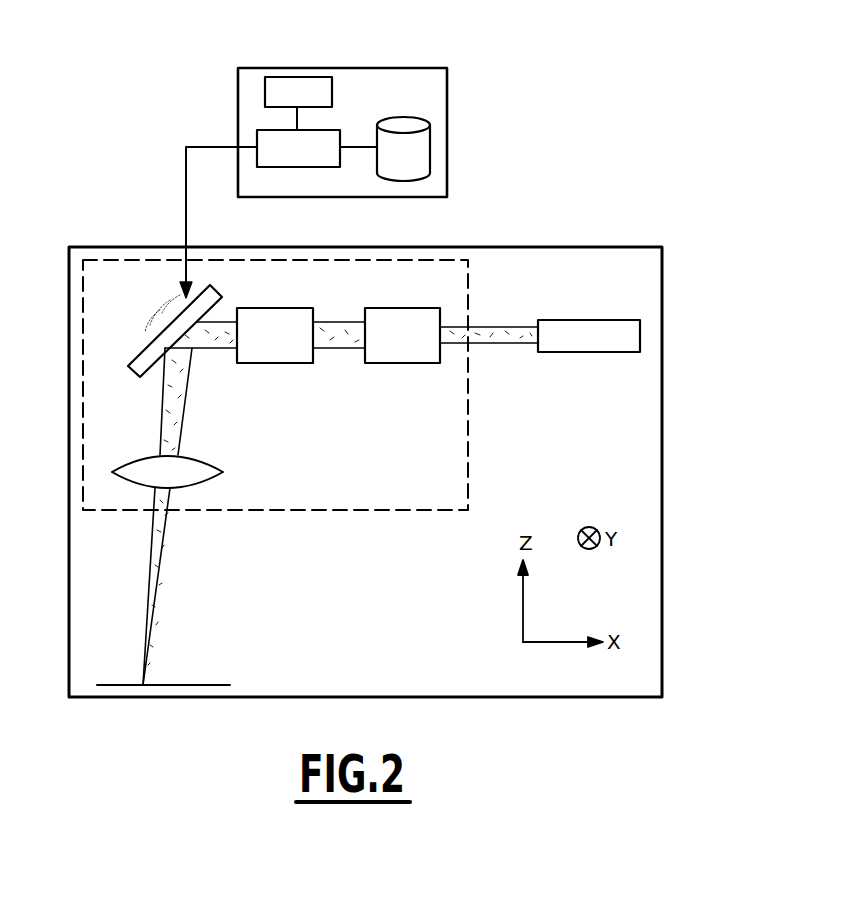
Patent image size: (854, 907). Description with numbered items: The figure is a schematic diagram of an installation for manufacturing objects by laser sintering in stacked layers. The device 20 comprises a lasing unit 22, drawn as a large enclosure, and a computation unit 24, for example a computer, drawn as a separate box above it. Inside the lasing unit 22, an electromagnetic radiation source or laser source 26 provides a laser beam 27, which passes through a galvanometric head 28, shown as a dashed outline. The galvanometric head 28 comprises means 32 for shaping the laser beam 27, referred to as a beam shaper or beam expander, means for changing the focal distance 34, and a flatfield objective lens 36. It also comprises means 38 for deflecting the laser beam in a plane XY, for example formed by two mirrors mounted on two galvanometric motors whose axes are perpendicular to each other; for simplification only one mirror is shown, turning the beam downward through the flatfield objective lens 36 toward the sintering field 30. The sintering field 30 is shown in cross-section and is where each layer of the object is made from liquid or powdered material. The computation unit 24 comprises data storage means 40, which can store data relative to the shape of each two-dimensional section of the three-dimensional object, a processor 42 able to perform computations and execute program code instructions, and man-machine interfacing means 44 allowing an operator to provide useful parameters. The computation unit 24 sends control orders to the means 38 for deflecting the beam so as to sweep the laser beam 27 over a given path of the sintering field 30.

The device 20 is at (578, 227).
The lasing unit 22 is at (662, 445).
The computation unit 24 is at (397, 63).
The laser source 26 is at (620, 320).
The laser beam 27 is at (500, 330).
The galvanometric head 28 is at (407, 260).
The sintering field 30 is at (190, 683).
The means for shaping the laser beam 32 is at (407, 343).
The means for changing the focal distance 34 is at (277, 352).
The flatfield objective lens 36 is at (197, 475).
The means for deflecting the laser beam 38 is at (131, 372).
The data storage means 40 is at (412, 155).
The processor 42 is at (269, 138).
The man-machine interfacing means 44 is at (303, 87).